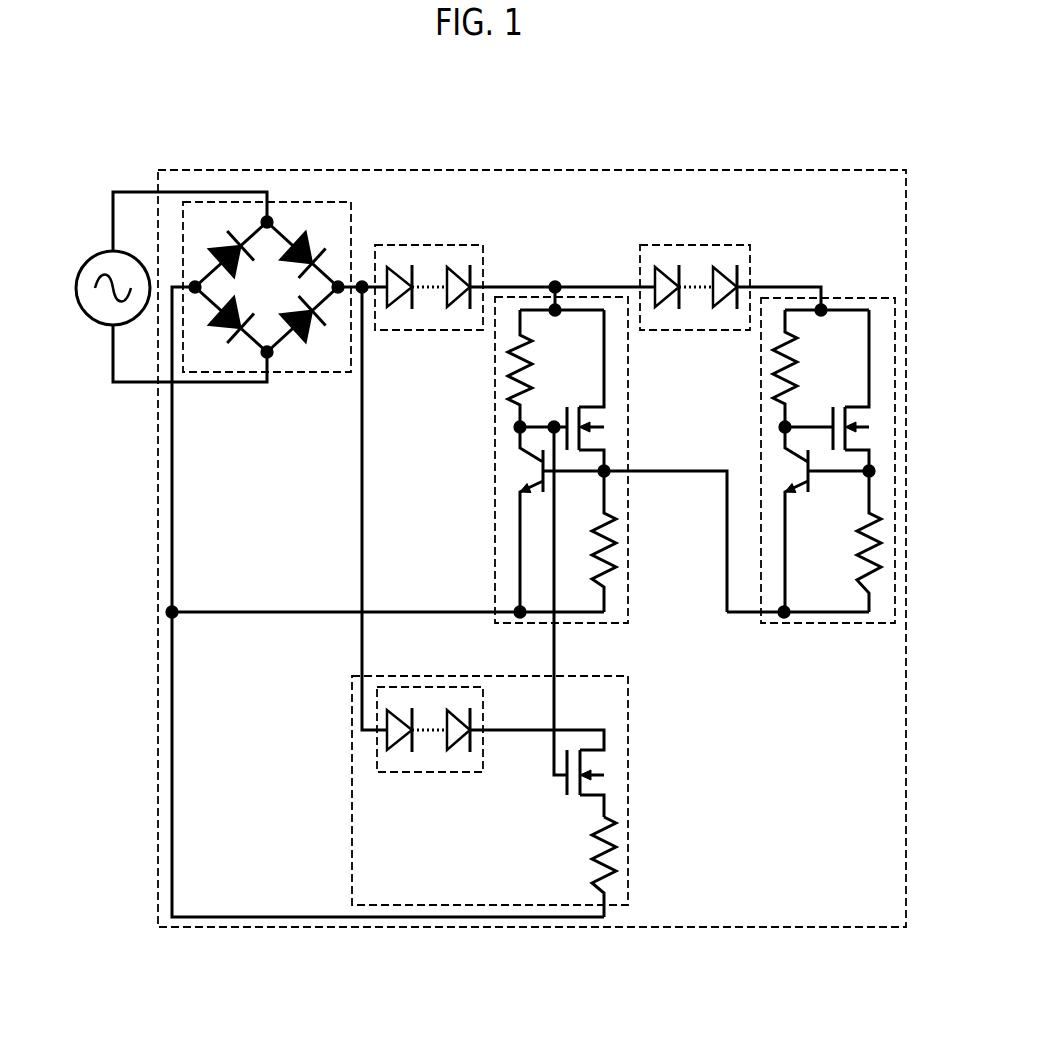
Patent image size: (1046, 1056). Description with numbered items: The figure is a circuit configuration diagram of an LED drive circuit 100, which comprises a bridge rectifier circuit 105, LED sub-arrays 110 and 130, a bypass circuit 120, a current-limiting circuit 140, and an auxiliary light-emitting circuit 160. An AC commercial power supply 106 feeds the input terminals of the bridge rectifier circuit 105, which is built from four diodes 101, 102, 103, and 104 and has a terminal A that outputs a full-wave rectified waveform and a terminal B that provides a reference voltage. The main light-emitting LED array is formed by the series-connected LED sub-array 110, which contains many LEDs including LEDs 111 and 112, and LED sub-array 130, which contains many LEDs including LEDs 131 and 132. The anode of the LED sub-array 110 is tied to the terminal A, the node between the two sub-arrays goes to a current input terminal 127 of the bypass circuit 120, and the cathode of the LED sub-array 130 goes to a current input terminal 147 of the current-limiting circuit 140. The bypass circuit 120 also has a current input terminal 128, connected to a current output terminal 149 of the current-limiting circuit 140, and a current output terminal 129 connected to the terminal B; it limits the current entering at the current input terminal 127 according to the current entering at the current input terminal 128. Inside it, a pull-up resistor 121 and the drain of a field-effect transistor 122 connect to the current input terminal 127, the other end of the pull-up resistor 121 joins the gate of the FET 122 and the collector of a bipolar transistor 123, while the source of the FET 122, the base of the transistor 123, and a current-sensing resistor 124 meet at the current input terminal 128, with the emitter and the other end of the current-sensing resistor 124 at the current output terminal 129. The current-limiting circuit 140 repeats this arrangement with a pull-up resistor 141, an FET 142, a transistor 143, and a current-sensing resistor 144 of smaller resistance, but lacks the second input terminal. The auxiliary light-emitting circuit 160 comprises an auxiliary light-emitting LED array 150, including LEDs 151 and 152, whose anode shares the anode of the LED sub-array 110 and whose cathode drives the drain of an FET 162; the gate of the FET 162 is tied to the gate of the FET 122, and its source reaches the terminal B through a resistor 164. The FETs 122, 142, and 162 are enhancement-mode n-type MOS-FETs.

The LED drive circuit 100 is at (893, 170).
The diode 101 is at (213, 240).
The diode 102 is at (307, 240).
The diode 103 is at (212, 325).
The diode 104 is at (313, 345).
The bridge rectifier circuit 105 is at (352, 201).
The AC commercial power supply 106 is at (93, 252).
The LED sub-array 110 is at (445, 243).
The LED 111 is at (397, 282).
The LED 112 is at (463, 283).
The bypass circuit 120 is at (540, 297).
The pull-up resistor 121 is at (510, 365).
The field-effect transistor 122 is at (606, 426).
The bipolar transistor 123 is at (523, 472).
The current-sensing resistor 124 is at (618, 567).
The current input terminal 127 is at (558, 286).
The current input terminal 128 is at (630, 472).
The current output terminal 129 is at (495, 611).
The LED sub-array 130 is at (703, 243).
The LED 131 is at (657, 268).
The LED 132 is at (717, 273).
The current-limiting circuit 140 is at (860, 297).
The pull-up resistor 141 is at (777, 367).
The FET 142 is at (845, 407).
The transistor 143 is at (807, 470).
The current-sensing resistor 144 is at (856, 560).
The current input terminal 147 is at (822, 308).
The current output terminal 149 is at (755, 612).
The auxiliary light-emitting LED array 150 is at (480, 773).
The LED 151 is at (390, 752).
The LED 152 is at (452, 752).
The auxiliary light-emitting circuit 160 is at (630, 718).
The FET 162 is at (604, 760).
The resistor 164 is at (618, 847).
The terminal A is at (342, 283).
The terminal B is at (196, 283).